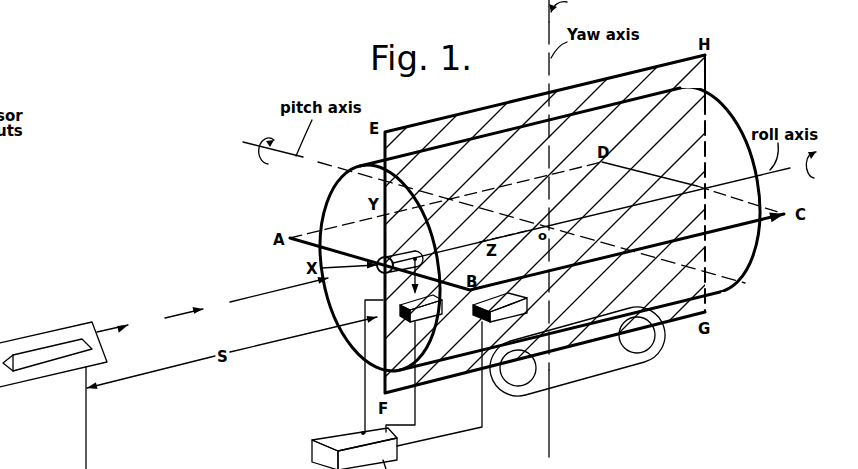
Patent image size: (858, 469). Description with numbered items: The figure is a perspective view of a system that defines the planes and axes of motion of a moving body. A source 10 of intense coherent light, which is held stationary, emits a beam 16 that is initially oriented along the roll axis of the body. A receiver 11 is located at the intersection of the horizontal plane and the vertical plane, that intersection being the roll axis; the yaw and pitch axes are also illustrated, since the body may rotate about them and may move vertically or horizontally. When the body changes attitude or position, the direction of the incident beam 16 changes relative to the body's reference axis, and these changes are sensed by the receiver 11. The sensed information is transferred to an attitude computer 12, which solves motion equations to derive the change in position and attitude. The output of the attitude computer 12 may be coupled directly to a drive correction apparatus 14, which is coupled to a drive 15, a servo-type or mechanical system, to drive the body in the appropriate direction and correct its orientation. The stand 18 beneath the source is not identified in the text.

The source of intense coherent light 10 is at (72, 337).
The receiver 11 is at (381, 257).
The attitude computer 12 is at (400, 318).
The drive correction apparatus 14 is at (505, 297).
The drive 15 is at (641, 366).
The beam 16 is at (166, 317).
The pedestal 18 is at (51, 372).